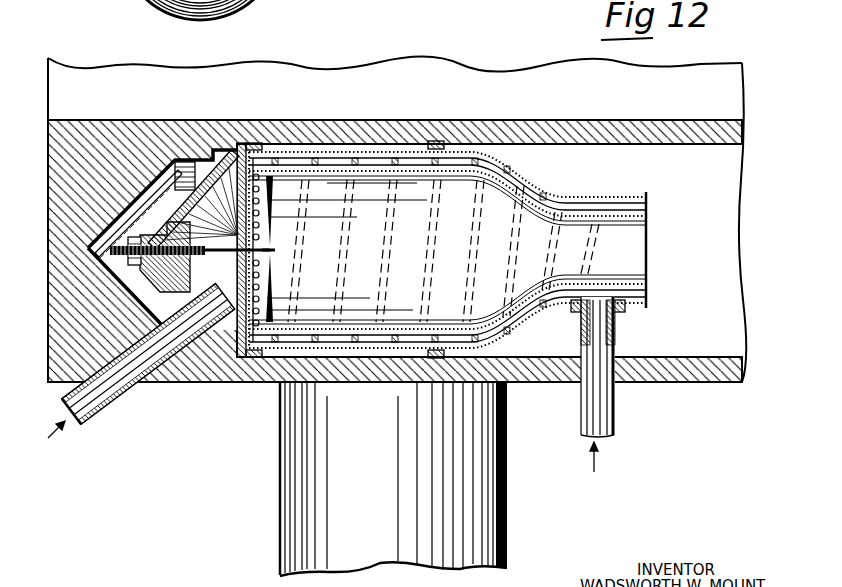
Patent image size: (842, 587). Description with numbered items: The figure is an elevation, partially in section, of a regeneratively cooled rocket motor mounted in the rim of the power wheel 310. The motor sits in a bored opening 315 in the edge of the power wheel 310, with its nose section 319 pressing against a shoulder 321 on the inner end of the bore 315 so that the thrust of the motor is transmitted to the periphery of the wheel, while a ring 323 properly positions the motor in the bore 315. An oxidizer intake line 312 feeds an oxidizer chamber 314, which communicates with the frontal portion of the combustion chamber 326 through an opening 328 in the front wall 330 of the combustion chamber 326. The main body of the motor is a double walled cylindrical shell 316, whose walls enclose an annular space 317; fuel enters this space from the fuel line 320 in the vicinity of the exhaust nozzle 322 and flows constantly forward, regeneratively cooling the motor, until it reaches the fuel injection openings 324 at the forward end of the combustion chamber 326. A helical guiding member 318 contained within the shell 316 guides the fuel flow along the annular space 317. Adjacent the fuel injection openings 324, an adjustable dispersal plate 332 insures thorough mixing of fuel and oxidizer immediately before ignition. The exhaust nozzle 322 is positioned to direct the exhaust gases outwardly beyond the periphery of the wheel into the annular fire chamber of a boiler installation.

The power wheel 310 is at (275, 122).
The oxidizer intake line 312 is at (107, 403).
The oxidizer chamber 314 is at (224, 302).
The bored opening 315 is at (326, 146).
The double walled cylindrical shell 316 is at (502, 160).
The annular space 317 is at (536, 178).
The helical guiding member 318 is at (565, 193).
The nose section 319 is at (183, 183).
The fuel line 320 is at (616, 419).
The shoulder 321 is at (213, 148).
The exhaust nozzle 322 is at (634, 250).
The ring 323 is at (440, 141).
The fuel injection openings 324 is at (258, 237).
The combustion chamber 326 is at (420, 253).
The opening 328 is at (238, 260).
The front wall 330 is at (237, 223).
The adjustable dispersal plate 332 is at (268, 257).